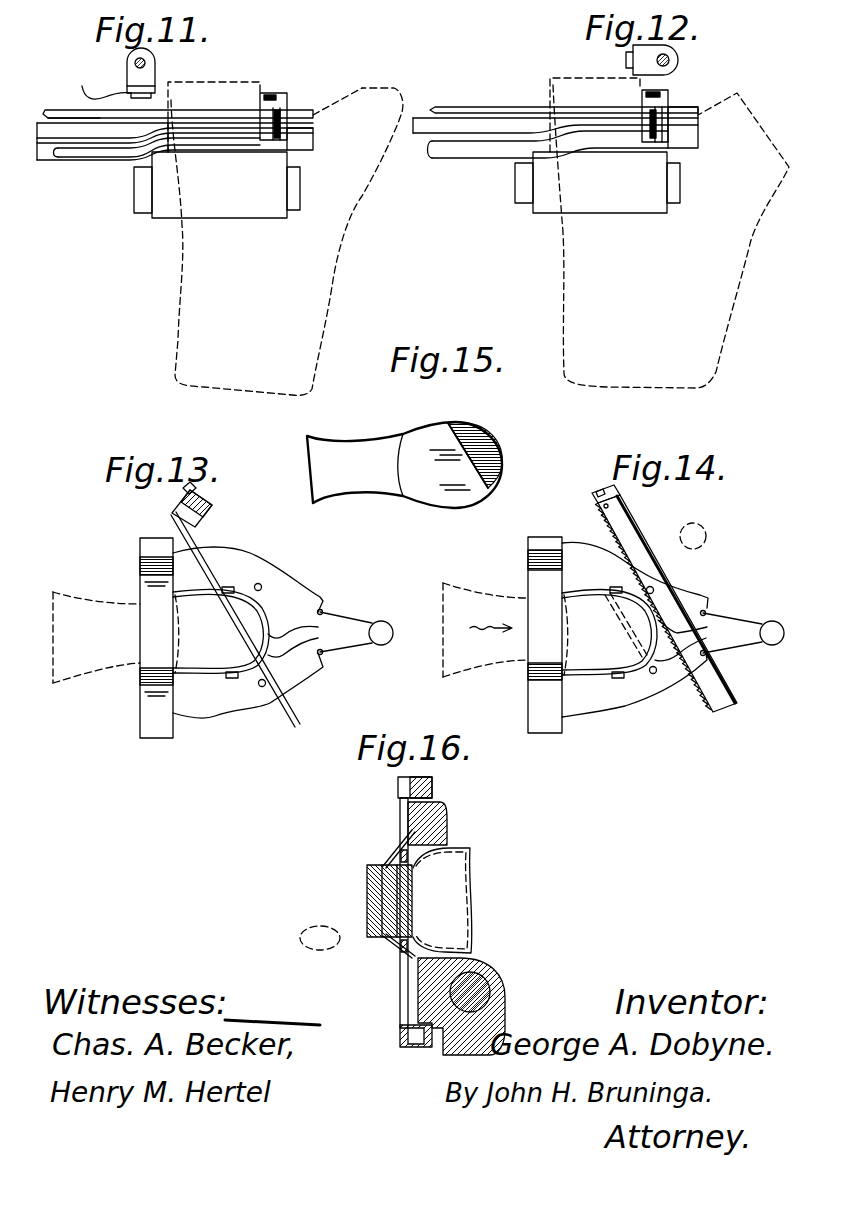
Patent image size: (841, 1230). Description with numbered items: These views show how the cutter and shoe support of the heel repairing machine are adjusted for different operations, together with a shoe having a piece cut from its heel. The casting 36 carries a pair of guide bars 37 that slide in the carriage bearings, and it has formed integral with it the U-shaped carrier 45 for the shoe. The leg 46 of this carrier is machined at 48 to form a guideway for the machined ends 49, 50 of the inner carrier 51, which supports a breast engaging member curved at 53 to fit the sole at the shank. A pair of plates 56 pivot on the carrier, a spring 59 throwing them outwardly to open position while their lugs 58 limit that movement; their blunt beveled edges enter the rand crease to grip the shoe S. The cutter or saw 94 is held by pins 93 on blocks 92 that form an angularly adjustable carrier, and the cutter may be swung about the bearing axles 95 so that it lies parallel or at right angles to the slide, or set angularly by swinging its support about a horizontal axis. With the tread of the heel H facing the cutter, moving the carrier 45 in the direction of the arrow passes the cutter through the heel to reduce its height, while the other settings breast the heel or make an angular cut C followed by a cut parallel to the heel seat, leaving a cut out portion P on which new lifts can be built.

In FIG. 11, the casting 36 is at (210, 185).
In FIG. 12, the casting 36 is at (591, 182).
In FIG. 16, the casting 36 is at (507, 1012).
In FIG. 11, the guide bars 37 is at (300, 191).
In FIG. 12, the guide bars 37 is at (680, 186).
In FIG. 16, the guide bars 37 is at (492, 985).
In FIG. 11, the carrier 45 is at (135, 192).
In FIG. 12, the carrier 45 is at (500, 128).
In FIG. 11, the leg 46 is at (315, 143).
In FIG. 12, the leg 46 is at (700, 130).
In FIG. 11, the guideways 48 is at (362, 90).
In FIG. 12, the guideways 48 is at (698, 123).
In FIG. 16, the guideways 48 is at (434, 795).
In FIG. 11, the machined end 49 is at (277, 140).
In FIG. 12, the machined end 49 is at (657, 142).
In FIG. 16, the machined end 50 is at (400, 1040).
In FIG. 11, the carrier 51 is at (85, 155).
In FIG. 12, the carrier 51 is at (492, 150).
In FIG. 16, the carrier 51 is at (418, 1046).
In FIG. 11, the curved portion 53 is at (275, 93).
In FIG. 12, the curved portion 53 is at (665, 92).
In FIG. 13, the curved portion 53 is at (158, 647).
In FIG. 14, the curved portion 53 is at (545, 645).
In FIG. 16, the curved portion 53 is at (368, 912).
In FIG. 13, the plates 56 is at (275, 598).
In FIG. 14, the plates 56 is at (610, 730).
In FIG. 16, the plates 56 is at (408, 835).
In FIG. 13, the lugs 58 is at (235, 673).
In FIG. 14, the lugs 58 is at (625, 672).
In FIG. 16, the lugs 58 is at (400, 853).
In FIG. 11, the spring 59 is at (66, 114).
In FIG. 12, the spring 59 is at (445, 107).
In FIG. 13, the spring 59 is at (355, 617).
In FIG. 14, the spring 59 is at (735, 615).
In FIG. 11, the blocks 92 is at (134, 52).
In FIG. 12, the blocks 92 is at (680, 52).
In FIG. 13, the blocks 92 is at (200, 518).
In FIG. 14, the blocks 92 is at (598, 505).
In FIG. 11, the pins 93 is at (152, 88).
In FIG. 12, the pins 93 is at (626, 62).
In FIG. 13, the pins 93 is at (175, 520).
In FIG. 14, the pins 93 is at (612, 498).
In FIG. 11, the cutter 94 is at (100, 83).
In FIG. 12, the cutter 94 is at (633, 50).
In FIG. 13, the cutter 94 is at (208, 620).
In FIG. 14, the cutter 94 is at (630, 540).
In FIG. 11, the bearing axles 95 is at (135, 65).
In FIG. 12, the bearing axles 95 is at (670, 58).
In FIG. 13, the bearing axles 95 is at (200, 490).
In FIG. 14, the bearing axles 95 is at (597, 493).
In FIG. 11, the heel H is at (228, 95).
In FIG. 12, the heel H is at (570, 90).
In FIG. 15, the heel H is at (423, 437).
In FIG. 13, the heel H is at (116, 637).
In FIG. 14, the heel H is at (505, 630).
In FIG. 16, the heel H is at (367, 883).
In FIG. 11, the shoe S is at (287, 241).
In FIG. 12, the shoe S is at (671, 236).
In FIG. 15, the cut C is at (463, 435).
In FIG. 14, the cut C is at (590, 625).
In FIG. 15, the cut out portion P is at (490, 453).